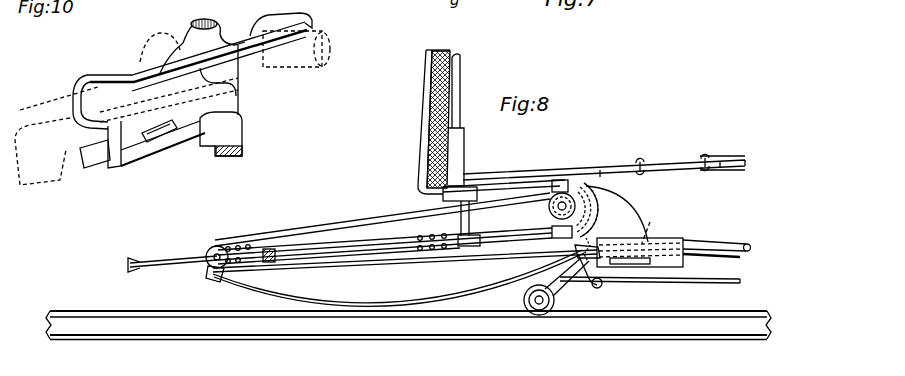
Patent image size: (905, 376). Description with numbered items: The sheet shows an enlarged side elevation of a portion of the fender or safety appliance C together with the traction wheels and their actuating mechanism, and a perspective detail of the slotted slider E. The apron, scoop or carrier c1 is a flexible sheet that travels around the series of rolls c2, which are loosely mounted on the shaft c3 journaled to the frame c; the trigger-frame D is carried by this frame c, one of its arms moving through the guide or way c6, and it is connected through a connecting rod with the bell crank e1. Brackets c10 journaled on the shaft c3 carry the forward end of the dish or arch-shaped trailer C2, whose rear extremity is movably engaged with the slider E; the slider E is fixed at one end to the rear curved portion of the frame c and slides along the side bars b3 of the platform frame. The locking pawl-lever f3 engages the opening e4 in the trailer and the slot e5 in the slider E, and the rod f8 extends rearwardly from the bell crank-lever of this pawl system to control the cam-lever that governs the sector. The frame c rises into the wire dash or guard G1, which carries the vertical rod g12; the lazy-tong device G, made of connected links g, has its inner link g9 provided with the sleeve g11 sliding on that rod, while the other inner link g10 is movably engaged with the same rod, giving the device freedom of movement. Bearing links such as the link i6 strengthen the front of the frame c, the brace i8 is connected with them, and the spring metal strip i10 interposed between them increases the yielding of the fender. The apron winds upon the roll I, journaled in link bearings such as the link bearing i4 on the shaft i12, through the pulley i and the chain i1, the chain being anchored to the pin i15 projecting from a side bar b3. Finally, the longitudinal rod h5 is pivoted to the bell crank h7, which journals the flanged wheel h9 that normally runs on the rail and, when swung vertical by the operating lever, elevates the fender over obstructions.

In FIG. 10, the slotted slider E is at (120, 75).
In FIG. 8, the slotted slider E is at (662, 240).
In FIG. 10, the trailer C2 is at (84, 97).
In FIG. 8, the trailer C2 is at (445, 302).
In FIG. 10, the slot in the slider e5 is at (240, 107).
In FIG. 10, the opening in the trailer e4 is at (163, 142).
In FIG. 10, the locking pawl-lever f3 is at (243, 134).
In FIG. 8, the wire dash or guard G1 is at (418, 122).
In FIG. 8, the vertical rod g12 is at (458, 77).
In FIG. 8, the sleeve g11 is at (458, 137).
In FIG. 8, the inner link of lazy-tong device g10 is at (447, 188).
In FIG. 8, the inner link of lazy-tong device g9 is at (472, 182).
In FIG. 8, the lazy-tong device G is at (604, 158).
In FIG. 8, the connected links g is at (748, 163).
In FIG. 8, the bearing link i6 is at (472, 215).
In FIG. 8, the fender or safety appliance C is at (382, 215).
In FIG. 8, the apron, scoop or carrier c1 is at (343, 226).
In FIG. 8, the frame of the fender c is at (523, 186).
In FIG. 8, the brace i8 is at (297, 239).
In FIG. 8, the sheet or strip of spring metal i10 is at (378, 253).
In FIG. 8, the bell crank e1 is at (402, 254).
In FIG. 8, the rolls c2 is at (206, 250).
In FIG. 8, the shaft c3 is at (218, 248).
In FIG. 8, the brackets c10 is at (208, 272).
In FIG. 8, the trigger-frame D is at (127, 265).
In FIG. 8, the guide or way c6 is at (268, 249).
In FIG. 8, the roll I is at (585, 203).
In FIG. 8, the pulley i is at (552, 208).
In FIG. 8, the link bearing i4 is at (563, 181).
In FIG. 8, the shaft i12 is at (592, 183).
In FIG. 8, the chain i1 is at (583, 243).
In FIG. 8, the side bars of the platform frame b3 is at (738, 241).
In FIG. 8, the rod f8 is at (741, 256).
In FIG. 8, the longitudinal rod h5 is at (741, 281).
In FIG. 8, the bell crank h7 is at (558, 276).
In FIG. 8, the pin i15 is at (599, 282).
In FIG. 8, the flanged wheel h9 is at (537, 306).